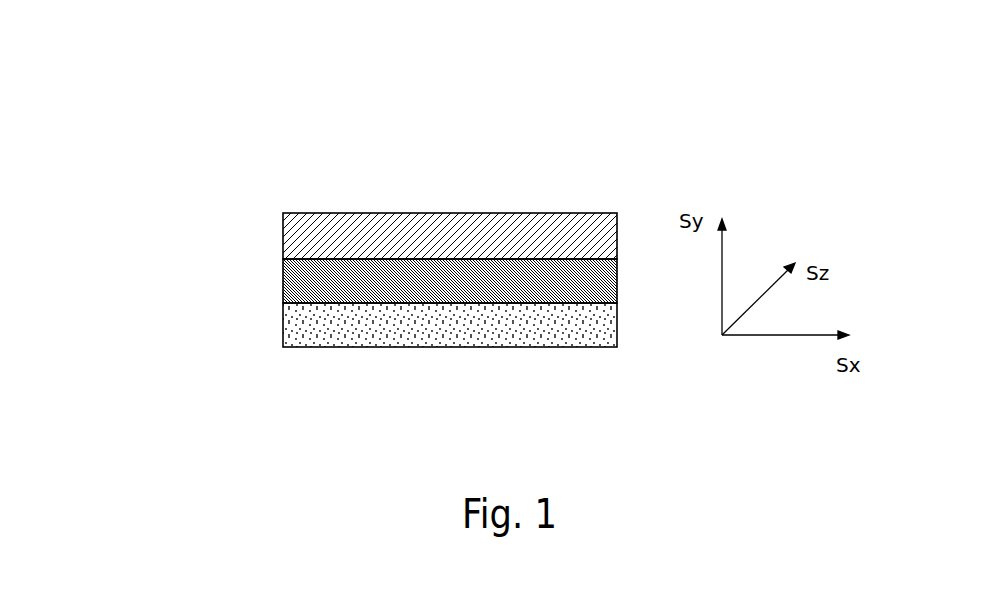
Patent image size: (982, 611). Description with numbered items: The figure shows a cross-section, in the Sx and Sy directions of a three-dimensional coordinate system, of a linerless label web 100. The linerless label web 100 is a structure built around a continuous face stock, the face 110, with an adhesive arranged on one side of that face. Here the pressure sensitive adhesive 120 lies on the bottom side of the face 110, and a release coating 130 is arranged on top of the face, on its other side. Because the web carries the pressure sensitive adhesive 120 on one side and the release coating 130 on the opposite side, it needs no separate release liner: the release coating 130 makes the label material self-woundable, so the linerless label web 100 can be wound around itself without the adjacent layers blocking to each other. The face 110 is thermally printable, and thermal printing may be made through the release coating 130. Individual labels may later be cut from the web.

The linerless label web 100 is at (339, 250).
The face 110 is at (283, 273).
The pressure sensitive adhesive 120 is at (393, 347).
The release coating 130 is at (427, 213).